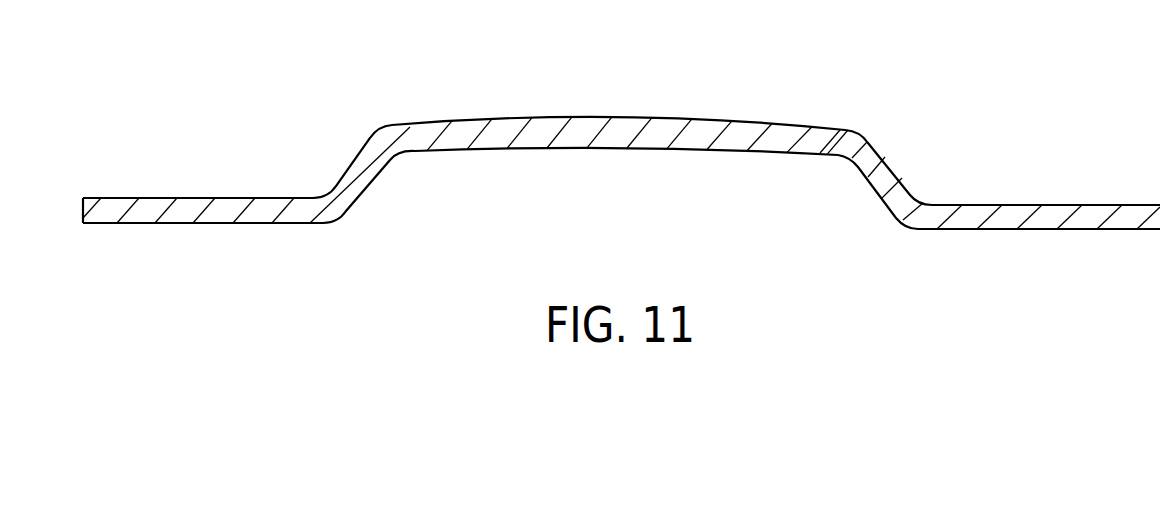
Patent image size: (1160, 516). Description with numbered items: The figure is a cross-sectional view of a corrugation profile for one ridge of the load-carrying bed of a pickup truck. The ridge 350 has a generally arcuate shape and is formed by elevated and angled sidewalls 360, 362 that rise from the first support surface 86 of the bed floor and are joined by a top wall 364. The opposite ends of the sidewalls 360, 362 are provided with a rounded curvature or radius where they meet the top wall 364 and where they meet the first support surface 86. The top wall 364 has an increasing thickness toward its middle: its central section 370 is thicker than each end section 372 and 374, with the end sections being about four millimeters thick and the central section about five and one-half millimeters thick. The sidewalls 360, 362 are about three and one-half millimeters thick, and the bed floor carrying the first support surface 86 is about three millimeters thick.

The ridge 350 is at (621, 127).
The elevated and angled sidewall 360 is at (320, 150).
The elevated and angled sidewall 362 is at (933, 152).
The top wall 364 is at (620, 129).
The central section 370 is at (622, 140).
The end section 372 is at (452, 142).
The end section 374 is at (800, 143).
The first support surface 86 is at (1092, 205).